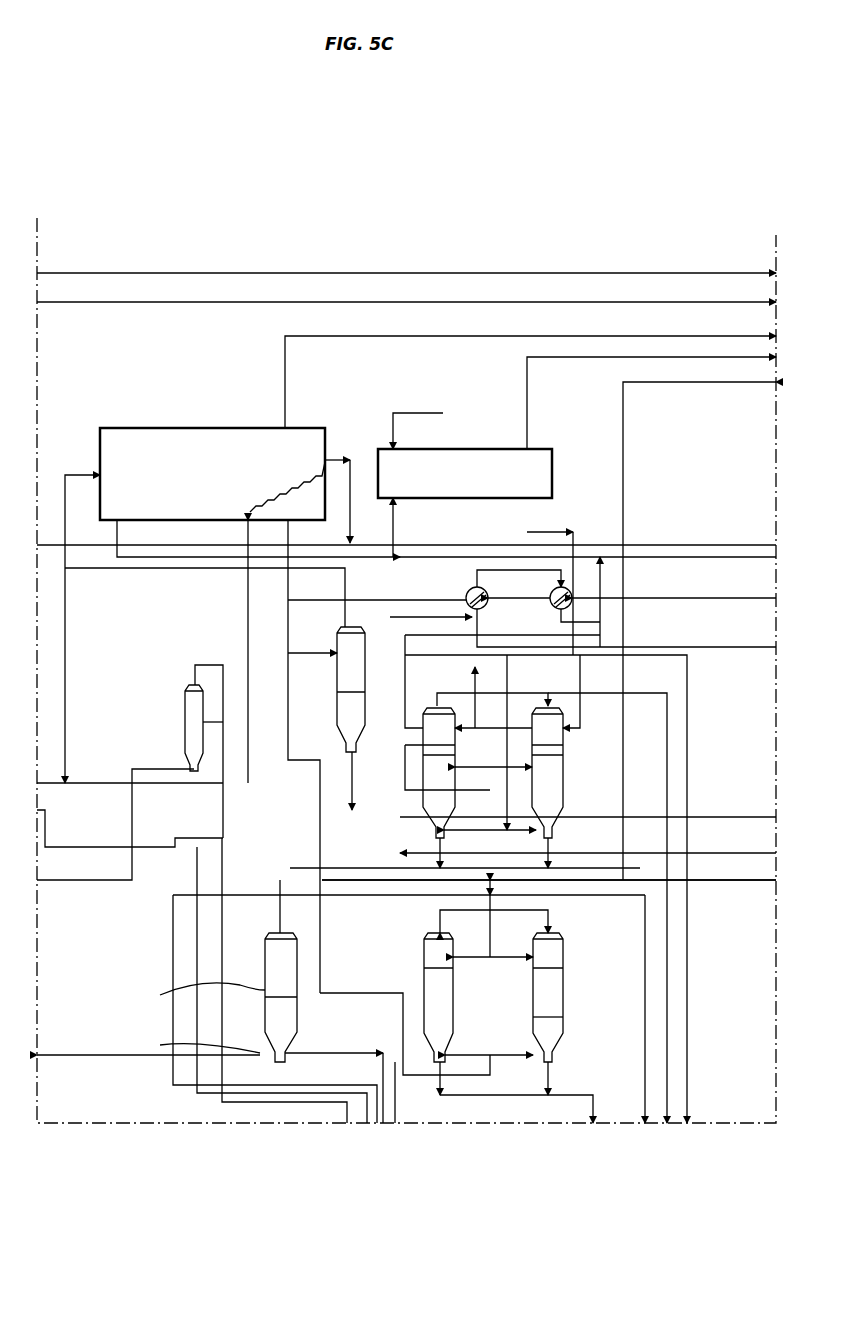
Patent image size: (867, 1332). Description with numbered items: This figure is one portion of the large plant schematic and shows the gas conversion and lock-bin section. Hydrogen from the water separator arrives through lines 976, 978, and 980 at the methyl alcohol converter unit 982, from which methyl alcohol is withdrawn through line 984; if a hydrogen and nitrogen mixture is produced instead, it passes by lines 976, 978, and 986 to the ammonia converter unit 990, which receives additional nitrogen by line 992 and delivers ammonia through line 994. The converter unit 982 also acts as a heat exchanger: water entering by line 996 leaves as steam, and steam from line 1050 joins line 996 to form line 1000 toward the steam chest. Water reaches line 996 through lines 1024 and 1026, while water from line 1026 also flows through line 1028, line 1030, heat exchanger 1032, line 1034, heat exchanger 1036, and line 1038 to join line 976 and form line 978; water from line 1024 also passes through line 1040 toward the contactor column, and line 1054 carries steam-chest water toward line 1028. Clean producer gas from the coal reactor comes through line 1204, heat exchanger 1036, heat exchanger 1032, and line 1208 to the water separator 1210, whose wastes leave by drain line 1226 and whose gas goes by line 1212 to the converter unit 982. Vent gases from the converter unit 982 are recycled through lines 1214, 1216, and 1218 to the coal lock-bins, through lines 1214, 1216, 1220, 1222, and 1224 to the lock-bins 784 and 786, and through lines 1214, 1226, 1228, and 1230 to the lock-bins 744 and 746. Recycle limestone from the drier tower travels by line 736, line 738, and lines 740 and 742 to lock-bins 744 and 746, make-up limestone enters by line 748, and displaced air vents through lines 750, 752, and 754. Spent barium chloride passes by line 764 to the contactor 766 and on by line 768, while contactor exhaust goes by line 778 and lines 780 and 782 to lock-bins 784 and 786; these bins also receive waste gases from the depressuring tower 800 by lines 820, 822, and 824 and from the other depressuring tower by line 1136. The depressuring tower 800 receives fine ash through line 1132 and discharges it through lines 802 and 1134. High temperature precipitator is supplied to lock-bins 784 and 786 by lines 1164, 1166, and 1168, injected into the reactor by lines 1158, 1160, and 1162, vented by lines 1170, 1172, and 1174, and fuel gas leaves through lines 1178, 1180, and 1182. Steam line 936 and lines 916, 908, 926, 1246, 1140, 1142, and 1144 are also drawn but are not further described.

The line 936 is at (112, 273).
The gas line 916 is at (112, 302).
The line 984 is at (690, 336).
The line 994 is at (690, 357).
The line 908 is at (690, 382).
The methyl alcohol converter unit 982 is at (198, 428).
The line 1212 is at (88, 476).
The line 1000 is at (42, 545).
The line 980 is at (110, 540).
The line 1214 is at (290, 545).
The line 996 is at (326, 458).
The ammonia converter unit 990 is at (440, 449).
The line 992 is at (404, 413).
The line 986 is at (393, 525).
The line 1050 is at (380, 545).
The line 978 is at (445, 557).
The line 1164 is at (551, 581).
The heat exchanger 1032 is at (468, 590).
The line 1034 is at (519, 583).
The heat exchanger 1036 is at (553, 604).
The line 1030 is at (480, 615).
The line 1208 is at (378, 602).
The line 1038 is at (604, 590).
The line 976 is at (760, 598).
The line 1204 is at (698, 600).
The line 1054 is at (770, 647).
The line 1166 is at (604, 647).
The line 1216 is at (470, 640).
The line 1218 is at (608, 656).
The line 1220 is at (531, 741).
The water separator 1210 is at (340, 672).
The drain line 1226 is at (340, 735).
The line 1178 is at (420, 702).
The line 1168 is at (562, 690).
The line 1180 is at (566, 722).
The line 1172 is at (540, 730).
The line 1174 is at (473, 676).
The line 1170 is at (540, 755).
The line 778 is at (195, 660).
The line 780 is at (492, 772).
The line 824 is at (435, 880).
The line 782 is at (540, 780).
The lock-bin 786 is at (660, 800).
The lock-bin 784 is at (420, 796).
The line 1158 is at (440, 845).
The line 1222 is at (467, 842).
The line 1224 is at (514, 842).
The line 1160 is at (579, 850).
The line 1246 is at (762, 817).
The line 926 is at (700, 853).
The contactor 766 is at (185, 707).
The line 764 is at (222, 700).
The line 768 is at (190, 760).
The line 1024 is at (65, 690).
The line 1026 is at (112, 783).
The line 1040 is at (50, 810).
The line 1028 is at (304, 783).
The line 820 is at (282, 900).
The depressuring tower 800 is at (265, 970).
The line 822 is at (400, 897).
The line 1162 is at (550, 895).
The line 1182 is at (664, 1118).
The lock-bin 744 is at (424, 955).
The line 742 is at (560, 933).
The line 740 is at (471, 926).
The line 738 is at (513, 926).
The line 754 is at (493, 926).
The line 750 is at (470, 960).
The line 752 is at (514, 965).
The line 748 is at (540, 915).
The lock-bin 746 is at (601, 972).
The line 1230 is at (540, 1020).
The line 1228 is at (470, 1055).
The line 1142 is at (552, 1080).
The line 1140 is at (516, 1092).
The line 1144 is at (593, 1118).
The line 802 is at (350, 1053).
The line 1132 is at (165, 994).
The line 1134 is at (160, 1046).
The line 1136 is at (395, 1123).
The line 736 is at (345, 1123).